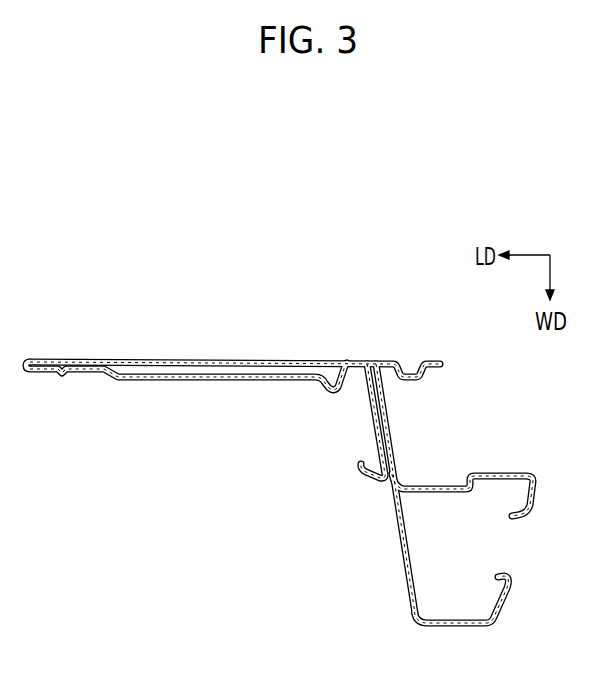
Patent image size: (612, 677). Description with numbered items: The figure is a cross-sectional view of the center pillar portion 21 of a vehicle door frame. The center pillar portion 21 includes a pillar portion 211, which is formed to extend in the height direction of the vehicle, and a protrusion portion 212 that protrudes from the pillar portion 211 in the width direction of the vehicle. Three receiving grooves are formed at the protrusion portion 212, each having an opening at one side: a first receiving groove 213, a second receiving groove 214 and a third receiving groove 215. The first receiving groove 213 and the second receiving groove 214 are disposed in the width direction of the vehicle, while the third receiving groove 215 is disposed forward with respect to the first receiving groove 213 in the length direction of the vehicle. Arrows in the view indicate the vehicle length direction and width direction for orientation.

The center pillar portion 21 is at (210, 533).
The pillar portion 211 is at (233, 358).
The protrusion portion 212 is at (403, 559).
The first receiving groove 213 is at (406, 431).
The second receiving groove 214 is at (466, 552).
The third receiving groove 215 is at (352, 420).